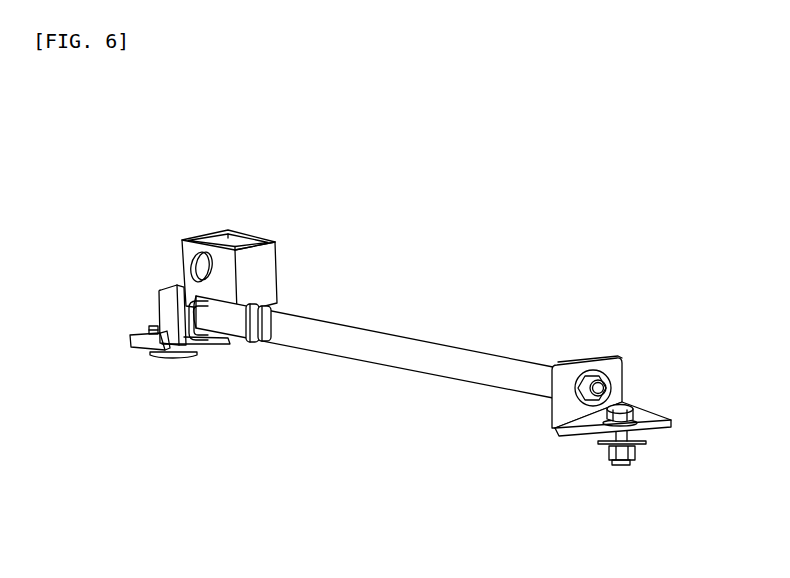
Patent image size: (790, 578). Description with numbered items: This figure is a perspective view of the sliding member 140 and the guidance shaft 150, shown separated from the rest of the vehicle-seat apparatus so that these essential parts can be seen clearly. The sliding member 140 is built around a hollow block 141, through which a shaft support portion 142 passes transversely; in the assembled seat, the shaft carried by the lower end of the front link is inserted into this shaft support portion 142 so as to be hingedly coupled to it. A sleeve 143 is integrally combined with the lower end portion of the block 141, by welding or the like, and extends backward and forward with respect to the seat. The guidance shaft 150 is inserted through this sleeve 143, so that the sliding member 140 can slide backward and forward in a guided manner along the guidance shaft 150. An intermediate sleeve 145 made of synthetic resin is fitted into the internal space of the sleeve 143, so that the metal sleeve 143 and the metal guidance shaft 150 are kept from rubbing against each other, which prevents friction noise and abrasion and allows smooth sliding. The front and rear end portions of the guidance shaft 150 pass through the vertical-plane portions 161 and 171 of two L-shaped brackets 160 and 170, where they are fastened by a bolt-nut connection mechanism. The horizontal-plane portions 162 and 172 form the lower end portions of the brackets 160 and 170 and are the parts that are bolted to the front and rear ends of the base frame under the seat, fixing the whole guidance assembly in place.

The sliding member 140 is at (318, 168).
The hollow block 141 is at (265, 267).
The shaft support portion 142 is at (185, 265).
The sleeve 143 is at (234, 343).
The intermediate sleeve 145 is at (260, 347).
The guidance shaft 150 is at (427, 318).
The L-shaped bracket 160 is at (133, 368).
The vertical-plane portion 161 is at (164, 288).
The horizontal-plane portion 162 is at (133, 342).
The L-shaped bracket 170 is at (530, 442).
The vertical-plane portion 171 is at (615, 362).
The horizontal-plane portion 172 is at (593, 435).